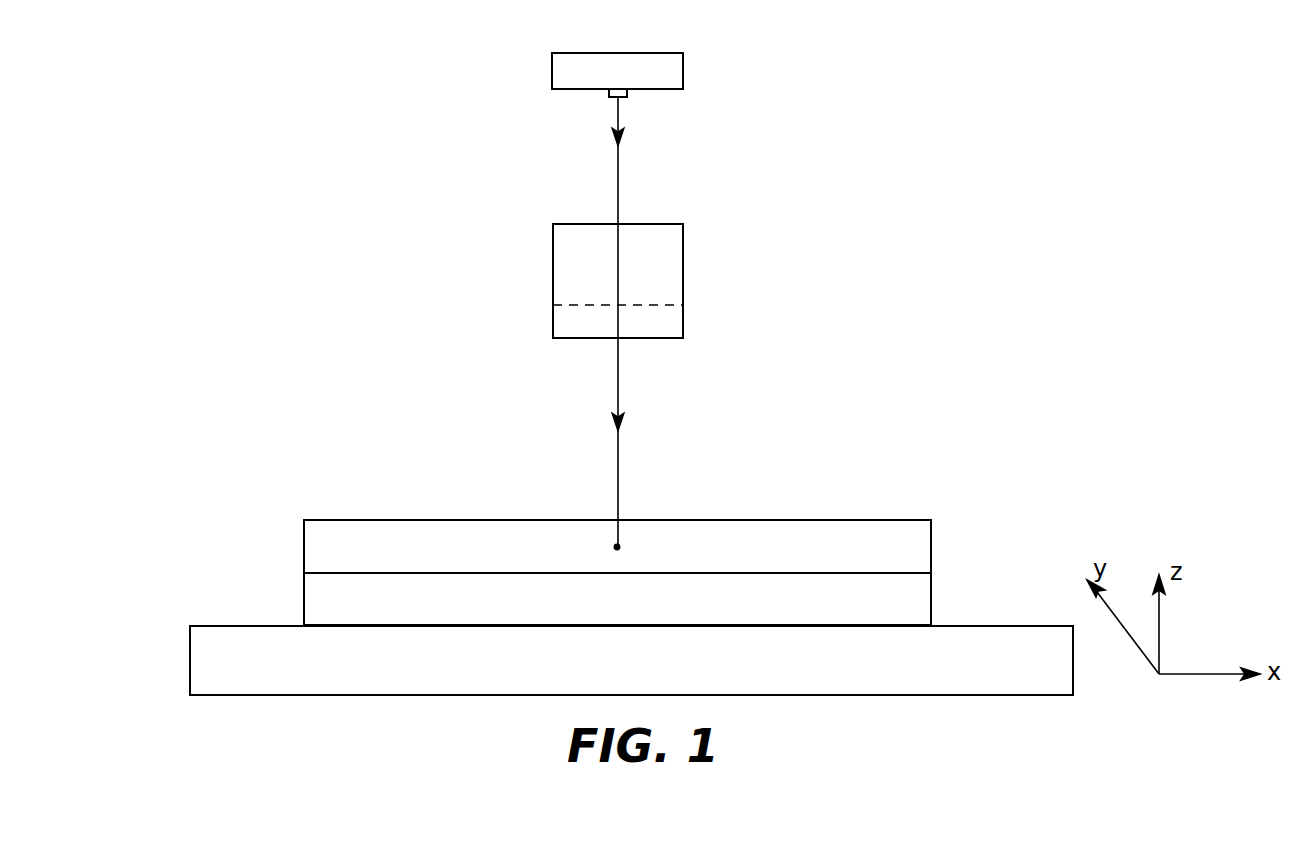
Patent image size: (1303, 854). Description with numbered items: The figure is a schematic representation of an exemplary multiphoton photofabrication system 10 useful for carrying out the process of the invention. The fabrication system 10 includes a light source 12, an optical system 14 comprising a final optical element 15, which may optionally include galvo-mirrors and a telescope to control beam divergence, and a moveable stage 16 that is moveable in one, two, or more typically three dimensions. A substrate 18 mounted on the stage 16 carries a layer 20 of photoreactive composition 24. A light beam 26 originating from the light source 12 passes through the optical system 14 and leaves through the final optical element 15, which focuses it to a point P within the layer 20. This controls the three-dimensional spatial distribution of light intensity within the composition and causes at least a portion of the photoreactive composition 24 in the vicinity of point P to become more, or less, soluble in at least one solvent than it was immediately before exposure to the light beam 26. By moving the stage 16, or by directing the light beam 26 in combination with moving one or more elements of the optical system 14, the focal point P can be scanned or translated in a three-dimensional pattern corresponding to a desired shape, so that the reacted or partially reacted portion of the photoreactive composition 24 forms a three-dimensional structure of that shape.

The fabrication system 10 is at (825, 290).
The light source 12 is at (683, 73).
The optical system 14 is at (683, 260).
The final optical element 15 is at (683, 320).
The moveable stage 16 is at (190, 655).
The substrate 18 is at (303, 600).
The layer 20 is at (932, 537).
The photoreactive composition 24 is at (368, 528).
The light beam 26 is at (618, 185).
The point P is at (619, 547).